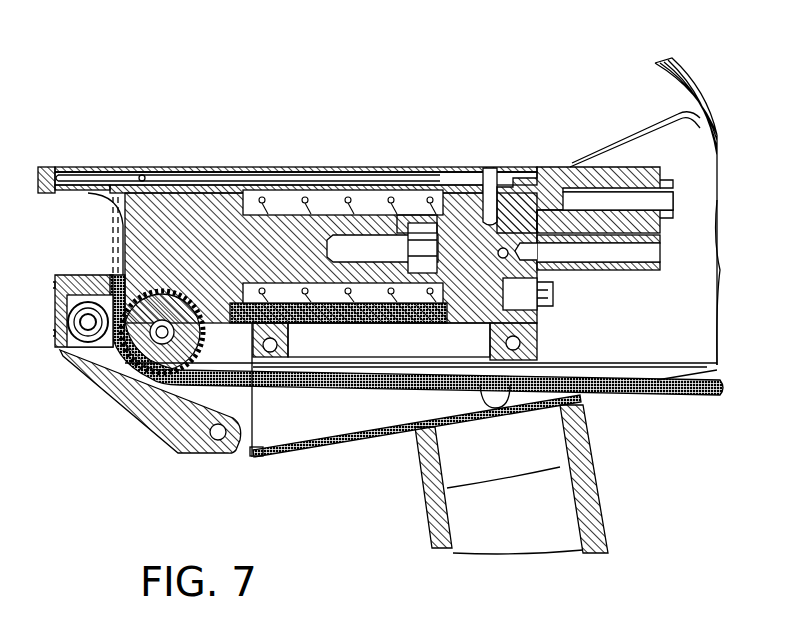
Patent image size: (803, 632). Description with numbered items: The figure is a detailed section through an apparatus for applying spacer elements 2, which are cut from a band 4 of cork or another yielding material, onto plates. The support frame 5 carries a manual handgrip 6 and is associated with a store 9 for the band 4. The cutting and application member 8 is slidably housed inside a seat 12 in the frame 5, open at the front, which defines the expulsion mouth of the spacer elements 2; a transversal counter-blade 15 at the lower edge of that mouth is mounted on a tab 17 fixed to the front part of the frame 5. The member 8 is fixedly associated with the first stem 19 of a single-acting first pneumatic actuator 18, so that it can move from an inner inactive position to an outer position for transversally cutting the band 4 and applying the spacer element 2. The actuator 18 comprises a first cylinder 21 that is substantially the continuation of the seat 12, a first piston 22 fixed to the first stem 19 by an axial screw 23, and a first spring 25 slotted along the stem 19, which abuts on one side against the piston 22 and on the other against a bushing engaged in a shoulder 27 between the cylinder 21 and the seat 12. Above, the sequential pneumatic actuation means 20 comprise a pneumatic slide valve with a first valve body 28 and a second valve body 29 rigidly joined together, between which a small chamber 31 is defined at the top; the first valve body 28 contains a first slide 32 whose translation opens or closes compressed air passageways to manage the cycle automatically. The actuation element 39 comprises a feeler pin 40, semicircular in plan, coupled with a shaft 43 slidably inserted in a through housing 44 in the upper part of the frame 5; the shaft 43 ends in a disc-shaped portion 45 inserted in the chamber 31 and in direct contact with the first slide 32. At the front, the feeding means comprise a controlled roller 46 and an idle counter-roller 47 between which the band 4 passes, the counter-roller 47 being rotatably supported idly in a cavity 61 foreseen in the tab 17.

The spacer element 2 is at (113, 241).
The band 4 is at (192, 388).
The support frame 5 is at (334, 428).
The manual handgrip 6 is at (424, 510).
The cutting and application member 8 is at (172, 228).
The store for the band 9 is at (700, 78).
The seat 12 is at (225, 206).
The transversal counter-blade 15 is at (108, 262).
The tab 17 is at (130, 420).
The first pneumatic actuator 18 is at (362, 296).
The first stem 19 is at (246, 362).
The sequential pneumatic actuation means 20 is at (575, 150).
The first cylinder 21 is at (333, 200).
The first piston 22 is at (411, 196).
The axial screw 23 is at (381, 248).
The first spring 25 is at (320, 362).
The shoulder 27 is at (212, 392).
The first valve body 28 is at (660, 226).
The second valve body 29 is at (540, 322).
The small chamber 31 is at (547, 220).
The first slide 32 is at (506, 177).
The actuation element 39 is at (67, 163).
The feeler pin 40 is at (82, 178).
The shaft 43 is at (208, 178).
The through housing 44 is at (265, 182).
The disc-shaped portion 45 is at (490, 186).
The controlled roller 46 is at (138, 368).
The idle counter-roller 47 is at (65, 348).
The cavity 61 is at (87, 277).